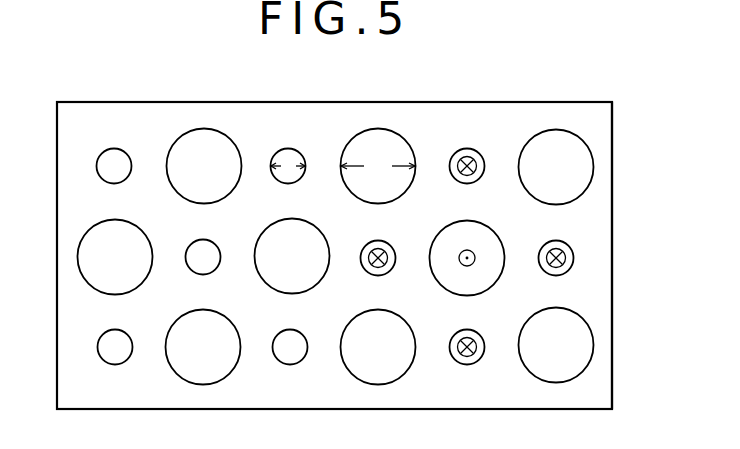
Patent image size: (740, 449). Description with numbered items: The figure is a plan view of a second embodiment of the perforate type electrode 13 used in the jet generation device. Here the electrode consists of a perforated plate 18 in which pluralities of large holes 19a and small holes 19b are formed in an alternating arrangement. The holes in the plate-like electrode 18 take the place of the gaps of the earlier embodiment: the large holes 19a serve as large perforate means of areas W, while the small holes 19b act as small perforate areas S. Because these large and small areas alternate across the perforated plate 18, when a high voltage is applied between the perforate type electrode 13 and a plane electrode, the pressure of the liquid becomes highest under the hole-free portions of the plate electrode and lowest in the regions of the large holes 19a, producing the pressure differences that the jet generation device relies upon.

The perforate type electrode 13 is at (480, 101).
The perforated plate 18 is at (602, 136).
The large holes 19a is at (241, 186).
The small holes 19b is at (190, 272).